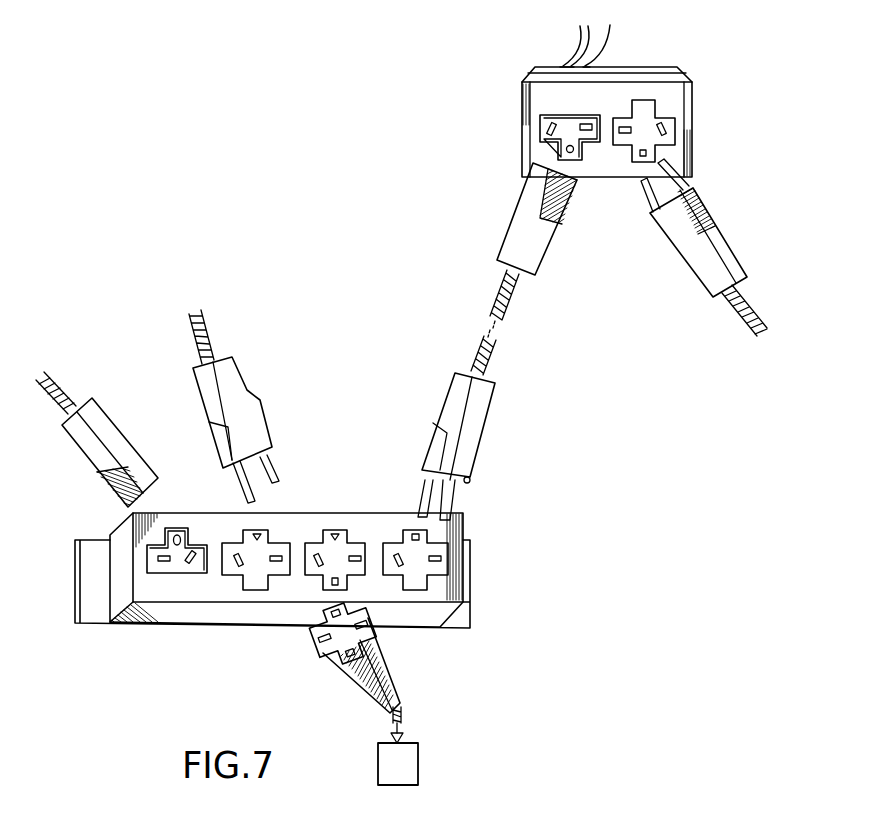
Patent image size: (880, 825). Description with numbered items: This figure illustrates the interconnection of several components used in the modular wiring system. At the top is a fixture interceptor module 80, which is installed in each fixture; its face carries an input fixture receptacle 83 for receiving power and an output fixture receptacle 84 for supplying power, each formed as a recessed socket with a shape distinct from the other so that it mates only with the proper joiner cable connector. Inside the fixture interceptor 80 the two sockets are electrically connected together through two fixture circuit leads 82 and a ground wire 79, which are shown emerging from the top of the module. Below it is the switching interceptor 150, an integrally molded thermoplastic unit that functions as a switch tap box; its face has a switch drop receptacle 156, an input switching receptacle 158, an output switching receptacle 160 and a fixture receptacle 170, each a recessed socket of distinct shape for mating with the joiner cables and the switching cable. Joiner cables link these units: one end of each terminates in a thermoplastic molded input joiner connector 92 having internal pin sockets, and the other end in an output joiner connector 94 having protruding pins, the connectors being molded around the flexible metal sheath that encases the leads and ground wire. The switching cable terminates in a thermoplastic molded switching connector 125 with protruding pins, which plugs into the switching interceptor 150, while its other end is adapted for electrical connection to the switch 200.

The ground wire 79 is at (611, 41).
The fixture interceptor module 80 is at (678, 77).
The fixture circuit leads 82 is at (570, 41).
The input fixture receptacle 83 is at (571, 126).
The output fixture receptacle 84 is at (648, 121).
The input joiner connector 92 is at (542, 236).
The output joiner connector 94 is at (706, 243).
The switching connector 125 is at (322, 648).
The switching interceptor 150 is at (407, 613).
The switch drop receptacle 156 is at (342, 552).
The input switching receptacle 158 is at (173, 568).
The output switching receptacle 160 is at (257, 573).
The fixture receptacle 170 is at (412, 565).
The switch 200 is at (407, 762).